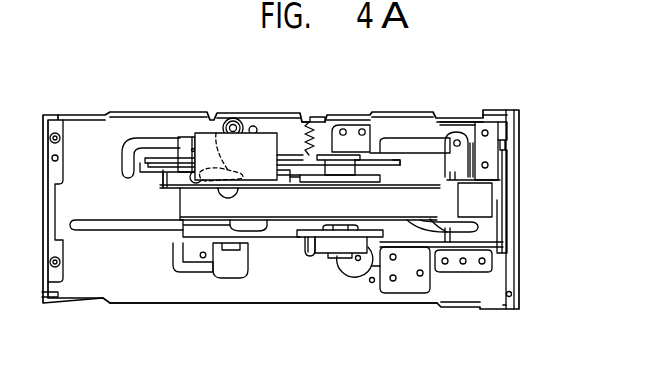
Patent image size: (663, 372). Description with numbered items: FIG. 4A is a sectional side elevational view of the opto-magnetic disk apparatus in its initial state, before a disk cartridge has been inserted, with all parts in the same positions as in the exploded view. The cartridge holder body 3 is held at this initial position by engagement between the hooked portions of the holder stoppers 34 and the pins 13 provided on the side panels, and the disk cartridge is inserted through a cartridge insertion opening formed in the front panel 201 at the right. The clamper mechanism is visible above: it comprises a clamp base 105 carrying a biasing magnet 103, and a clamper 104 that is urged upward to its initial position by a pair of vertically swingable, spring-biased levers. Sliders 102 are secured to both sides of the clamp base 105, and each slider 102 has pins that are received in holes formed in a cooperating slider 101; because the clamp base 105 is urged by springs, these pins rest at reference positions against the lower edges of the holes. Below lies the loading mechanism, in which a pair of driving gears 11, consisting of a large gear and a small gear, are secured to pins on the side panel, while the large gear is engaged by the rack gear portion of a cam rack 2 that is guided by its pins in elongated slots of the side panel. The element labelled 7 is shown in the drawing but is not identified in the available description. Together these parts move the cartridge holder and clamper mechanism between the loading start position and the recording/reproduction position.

The cam rack 2 is at (193, 237).
The cartridge holder body 3 is at (457, 133).
The lever 7 is at (327, 245).
The driving gears 11 is at (355, 268).
The pins 13 is at (193, 197).
The holder stoppers 34 is at (216, 133).
The slider 101 is at (300, 236).
The sliders 102 is at (288, 130).
The biasing magnet 103 is at (207, 150).
The clamper 104 is at (337, 167).
The clamp base 105 is at (390, 162).
The front panel 201 is at (513, 157).